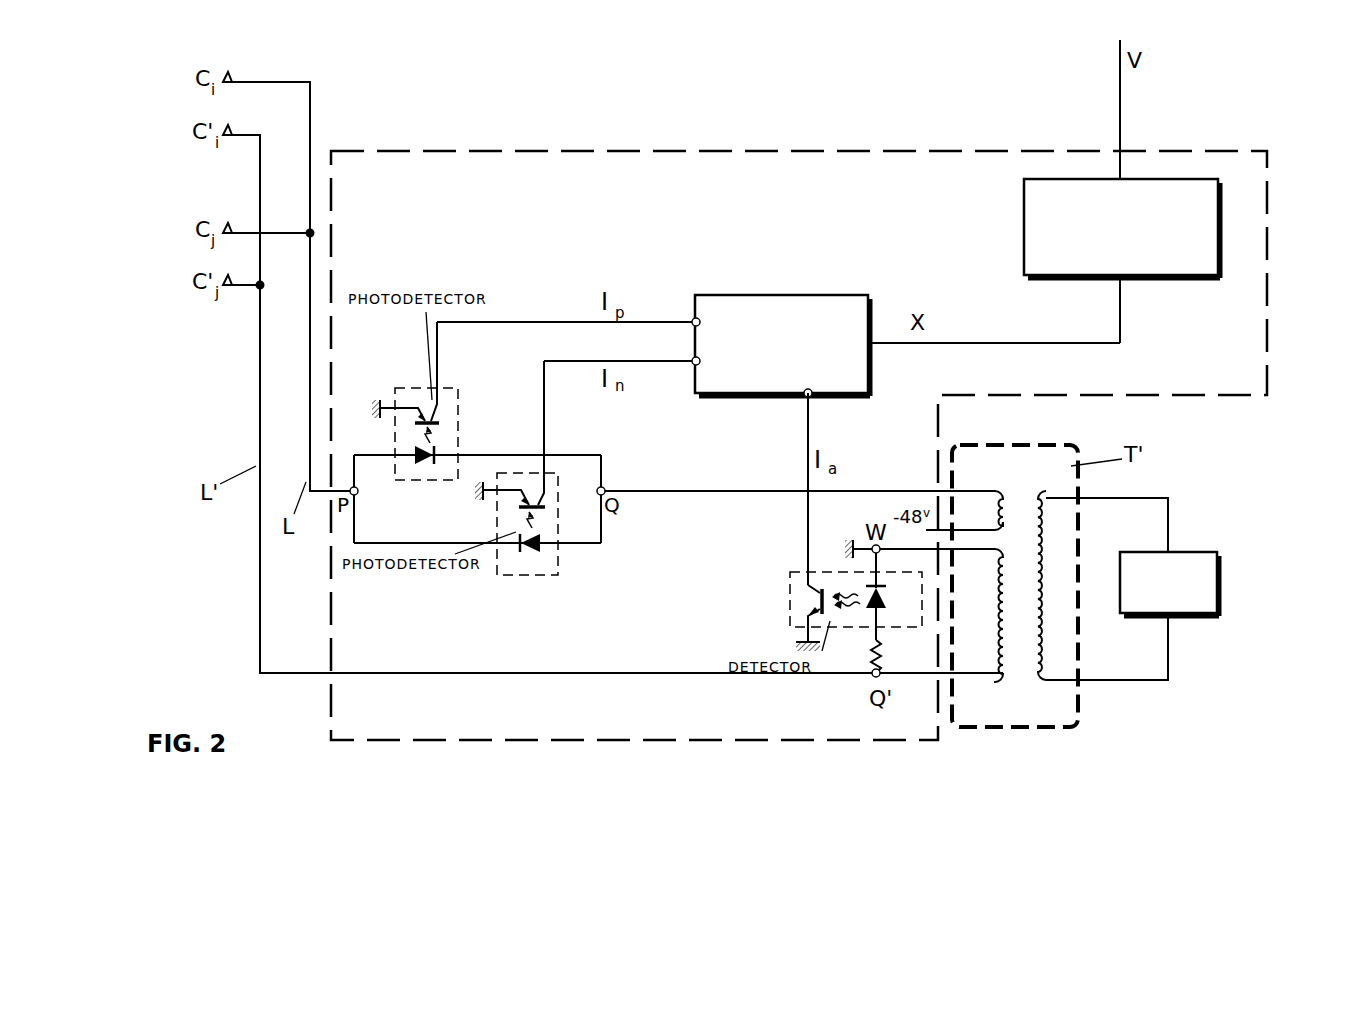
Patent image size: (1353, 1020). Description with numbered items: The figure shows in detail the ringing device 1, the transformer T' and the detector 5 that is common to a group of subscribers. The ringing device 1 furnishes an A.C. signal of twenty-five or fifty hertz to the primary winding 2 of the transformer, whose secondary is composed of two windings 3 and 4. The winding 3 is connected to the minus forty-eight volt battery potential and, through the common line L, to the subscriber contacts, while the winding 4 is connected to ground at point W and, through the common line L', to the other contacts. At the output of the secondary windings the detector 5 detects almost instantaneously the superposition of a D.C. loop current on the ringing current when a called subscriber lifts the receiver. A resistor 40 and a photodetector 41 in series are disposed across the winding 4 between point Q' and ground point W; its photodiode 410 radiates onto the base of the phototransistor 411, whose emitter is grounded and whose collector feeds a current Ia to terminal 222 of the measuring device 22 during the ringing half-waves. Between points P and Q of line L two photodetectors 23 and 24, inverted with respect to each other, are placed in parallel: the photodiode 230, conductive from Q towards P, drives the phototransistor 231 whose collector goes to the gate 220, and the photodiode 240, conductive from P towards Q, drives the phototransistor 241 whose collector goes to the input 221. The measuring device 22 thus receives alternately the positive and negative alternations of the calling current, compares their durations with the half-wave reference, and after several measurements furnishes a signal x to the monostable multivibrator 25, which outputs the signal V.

The ringing device 1 is at (1190, 566).
The primary winding 2 is at (1045, 628).
The winding 3 is at (1010, 504).
The winding 4 is at (990, 632).
The detector 5 is at (551, 176).
The measuring device 22 is at (777, 305).
The photodetector 23 is at (557, 491).
The photodetector 24 is at (443, 420).
The monostable multivibrator 25 is at (1178, 262).
The resistor 40 is at (873, 653).
The photodetector 41 is at (824, 603).
The gate 220 is at (680, 371).
The input 221 is at (680, 309).
The terminal 222 is at (792, 407).
The photodiode 230 is at (531, 556).
The phototransistor 231 is at (530, 497).
The photodiode 240 is at (430, 466).
The phototransistor 241 is at (430, 406).
The photodiode 410 is at (886, 612).
The phototransistor 411 is at (812, 601).